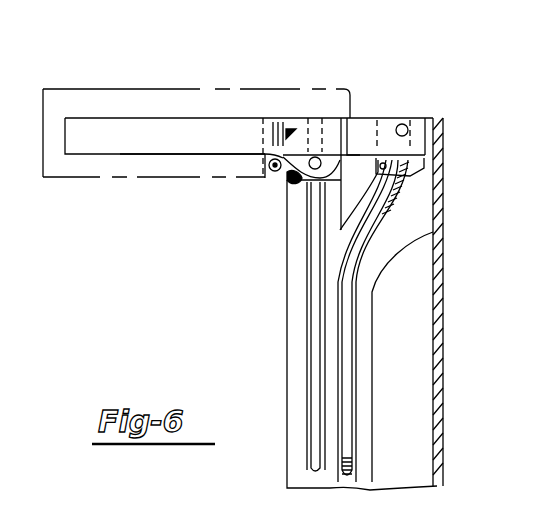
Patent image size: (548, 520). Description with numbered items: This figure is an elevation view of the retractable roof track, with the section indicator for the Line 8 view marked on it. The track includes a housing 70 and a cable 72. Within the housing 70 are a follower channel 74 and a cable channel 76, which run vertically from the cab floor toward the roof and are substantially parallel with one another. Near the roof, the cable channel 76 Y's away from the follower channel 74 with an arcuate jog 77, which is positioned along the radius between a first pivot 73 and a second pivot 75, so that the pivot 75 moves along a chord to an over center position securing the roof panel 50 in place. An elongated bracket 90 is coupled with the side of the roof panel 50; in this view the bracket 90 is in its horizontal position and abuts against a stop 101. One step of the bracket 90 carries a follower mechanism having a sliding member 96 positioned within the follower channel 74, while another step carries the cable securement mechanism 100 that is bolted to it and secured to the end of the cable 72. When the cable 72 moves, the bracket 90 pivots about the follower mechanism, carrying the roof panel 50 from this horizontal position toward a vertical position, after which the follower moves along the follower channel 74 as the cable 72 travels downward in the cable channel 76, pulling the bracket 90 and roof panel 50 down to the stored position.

The section line 8- 8 is at (55, 108).
The roof panel 50 is at (187, 87).
The housing 70 is at (288, 338).
The cable 72 is at (388, 218).
The pivot 73 is at (318, 158).
The follower channel 74 is at (308, 462).
The pivot 75 is at (400, 124).
The cable channel 76 is at (353, 468).
The arcuate jog 77 is at (384, 221).
The bracket 90 is at (197, 157).
The sliding member 96 is at (289, 183).
The cable securement mechanism 100 is at (413, 174).
The stop 101 is at (265, 177).